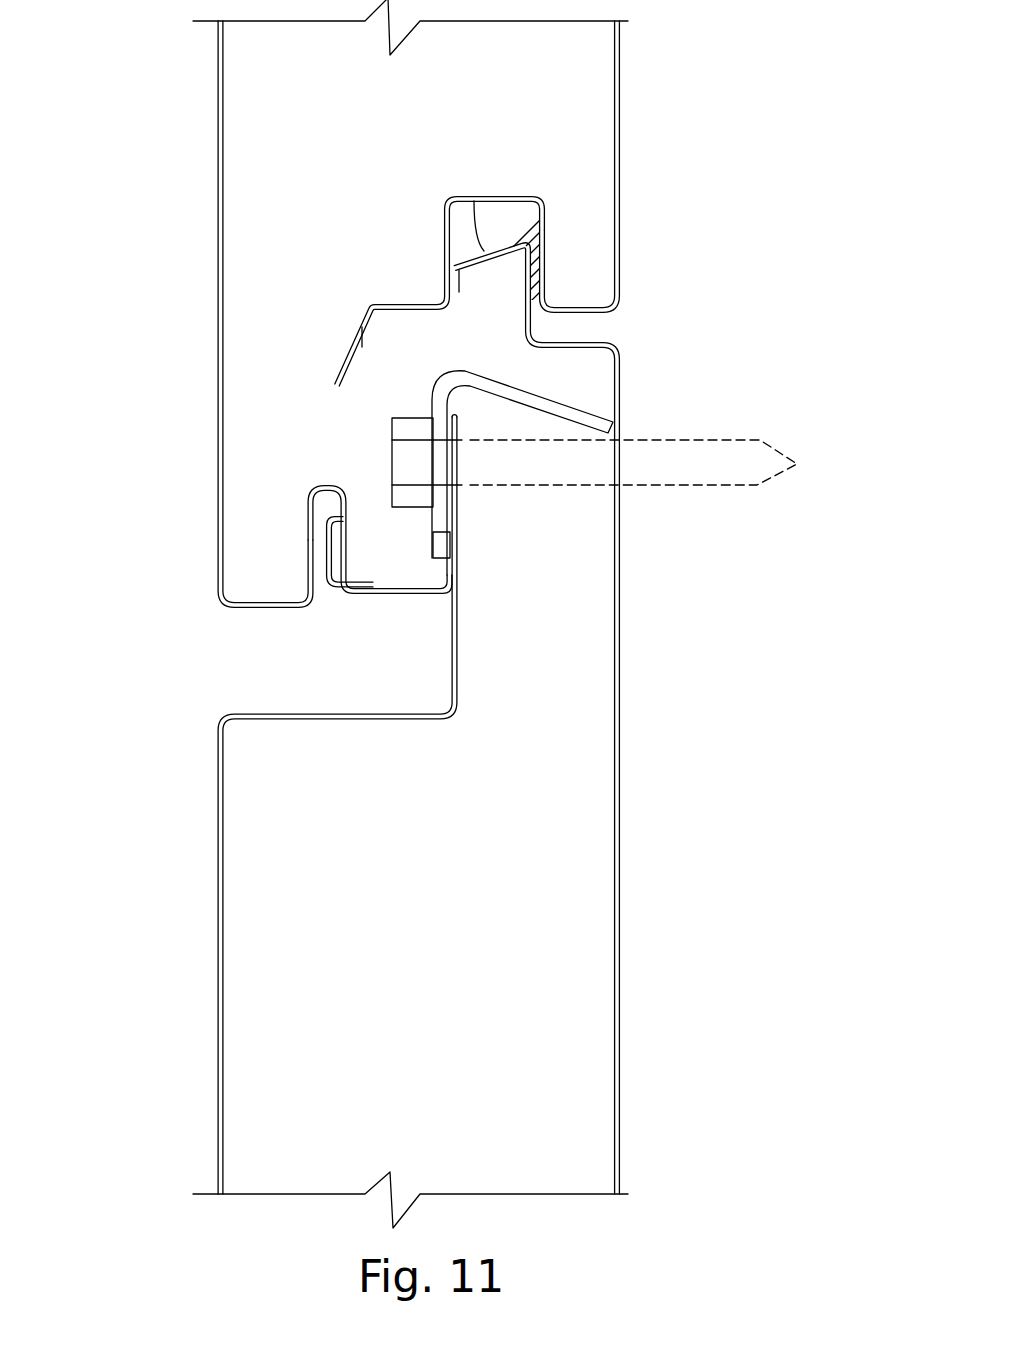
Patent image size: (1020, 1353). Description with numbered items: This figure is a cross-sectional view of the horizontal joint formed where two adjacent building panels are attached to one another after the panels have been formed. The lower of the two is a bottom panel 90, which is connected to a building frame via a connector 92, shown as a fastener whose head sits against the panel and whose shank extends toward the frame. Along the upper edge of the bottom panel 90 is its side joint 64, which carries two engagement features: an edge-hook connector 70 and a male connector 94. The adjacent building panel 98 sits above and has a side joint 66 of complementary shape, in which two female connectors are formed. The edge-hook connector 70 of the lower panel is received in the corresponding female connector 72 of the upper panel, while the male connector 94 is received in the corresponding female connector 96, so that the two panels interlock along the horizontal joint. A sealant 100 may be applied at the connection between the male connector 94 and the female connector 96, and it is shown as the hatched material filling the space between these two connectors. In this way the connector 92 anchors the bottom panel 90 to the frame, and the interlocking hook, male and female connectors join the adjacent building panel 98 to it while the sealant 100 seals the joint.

The side joint 64 is at (668, 413).
The side joint 66 is at (198, 393).
The edge-hook connector 70 is at (325, 563).
The female connector 72 is at (303, 520).
The bottom panel 90 is at (192, 1070).
The connector 92 is at (373, 432).
The male connector 94 is at (520, 268).
The female connector 96 is at (552, 197).
The adjacent building panel 98 is at (206, 192).
The sealant 100 is at (522, 222).